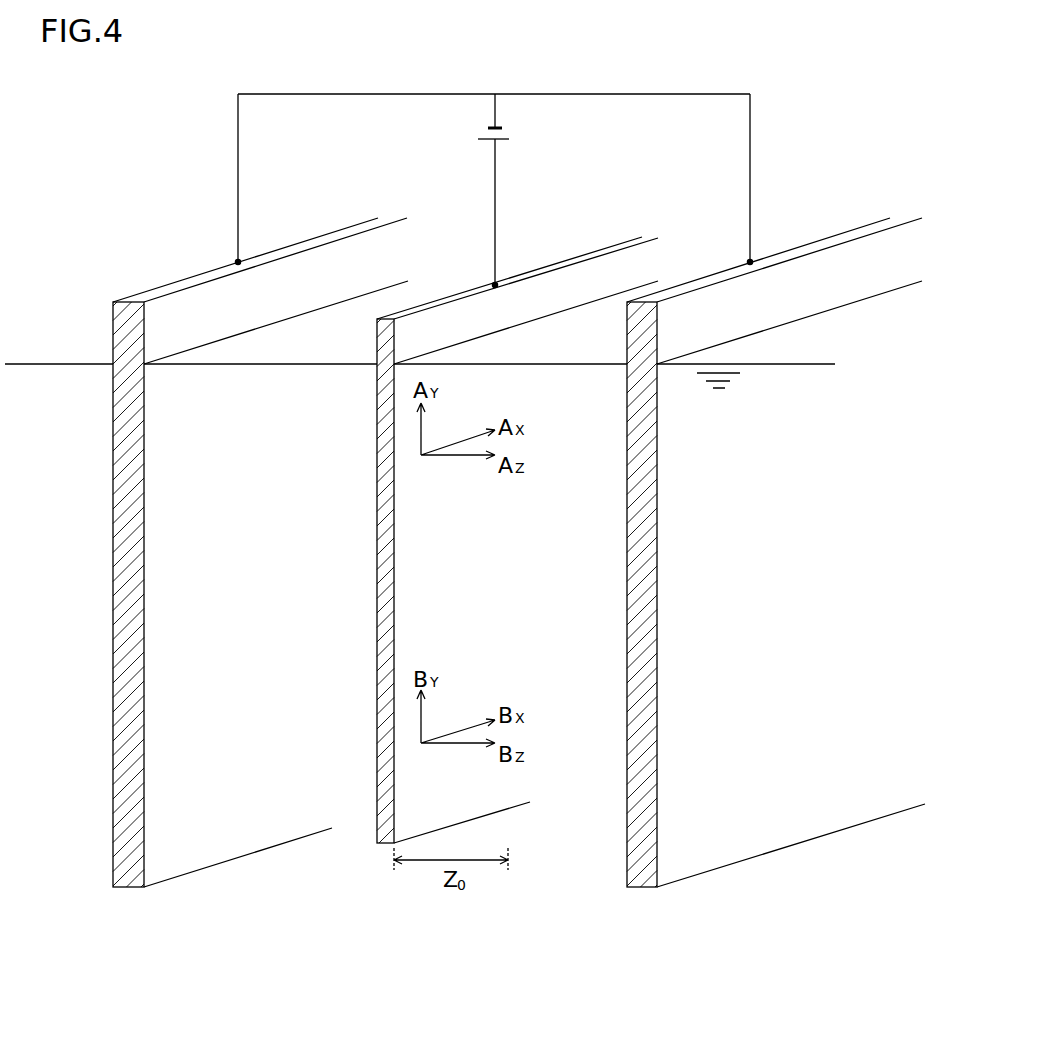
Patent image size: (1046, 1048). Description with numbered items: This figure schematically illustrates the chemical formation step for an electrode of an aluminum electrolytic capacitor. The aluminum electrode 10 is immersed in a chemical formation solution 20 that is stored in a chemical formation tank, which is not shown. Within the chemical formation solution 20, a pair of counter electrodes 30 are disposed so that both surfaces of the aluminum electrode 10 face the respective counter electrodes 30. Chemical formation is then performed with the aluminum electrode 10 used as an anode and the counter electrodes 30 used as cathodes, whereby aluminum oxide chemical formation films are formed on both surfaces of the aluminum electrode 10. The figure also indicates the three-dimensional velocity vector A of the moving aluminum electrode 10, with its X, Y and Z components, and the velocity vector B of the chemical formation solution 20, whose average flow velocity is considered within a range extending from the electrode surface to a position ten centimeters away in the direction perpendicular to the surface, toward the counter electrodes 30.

The aluminum electrode 10 is at (383, 812).
The chemical formation solution 20 is at (68, 426).
The counter electrodes 30 is at (116, 838).